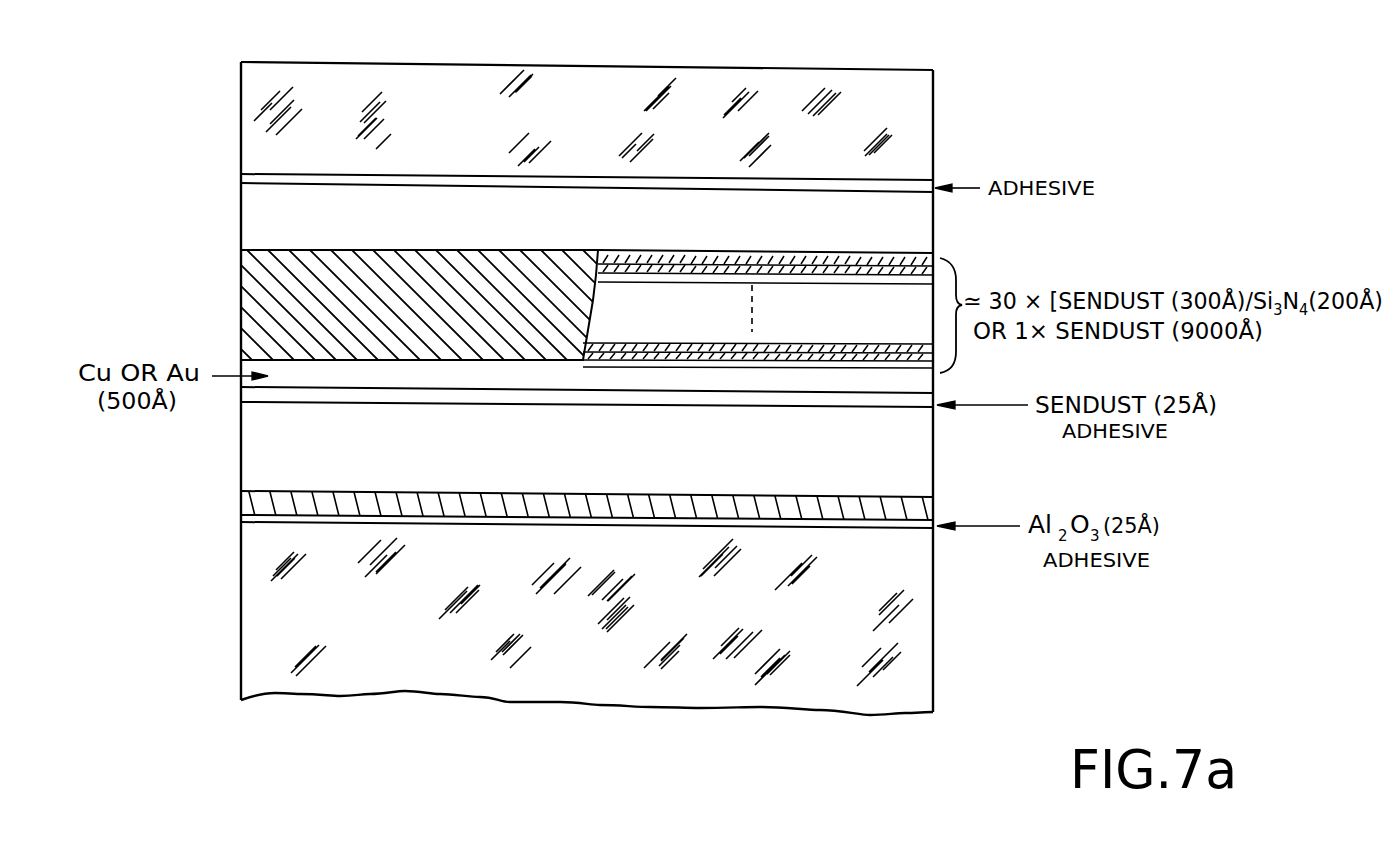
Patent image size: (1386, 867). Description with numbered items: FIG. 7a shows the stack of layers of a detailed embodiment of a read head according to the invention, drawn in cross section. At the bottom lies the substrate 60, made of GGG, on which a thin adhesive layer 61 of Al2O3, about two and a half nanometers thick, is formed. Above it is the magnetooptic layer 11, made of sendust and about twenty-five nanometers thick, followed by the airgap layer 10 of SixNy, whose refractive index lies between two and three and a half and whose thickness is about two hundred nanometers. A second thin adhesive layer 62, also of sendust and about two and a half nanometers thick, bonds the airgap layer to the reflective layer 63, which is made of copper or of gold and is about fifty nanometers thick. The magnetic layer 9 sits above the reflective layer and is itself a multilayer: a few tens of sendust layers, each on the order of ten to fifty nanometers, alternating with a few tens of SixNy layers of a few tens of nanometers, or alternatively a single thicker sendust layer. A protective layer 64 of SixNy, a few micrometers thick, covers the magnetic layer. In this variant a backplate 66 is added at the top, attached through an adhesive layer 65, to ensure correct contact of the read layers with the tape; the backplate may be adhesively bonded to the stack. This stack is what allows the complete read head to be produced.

The backplate 66 is at (933, 96).
The adhesive layer 65 is at (933, 150).
The protective layer 64 is at (933, 222).
The magnetic layer 9 is at (264, 304).
The reflective layer 63 is at (937, 387).
The adhesive layer 62 is at (917, 404).
The airgap layer 10 is at (268, 452).
The magnetooptic layer 11 is at (937, 507).
The adhesive layer 61 is at (933, 553).
The substrate 60 is at (933, 676).